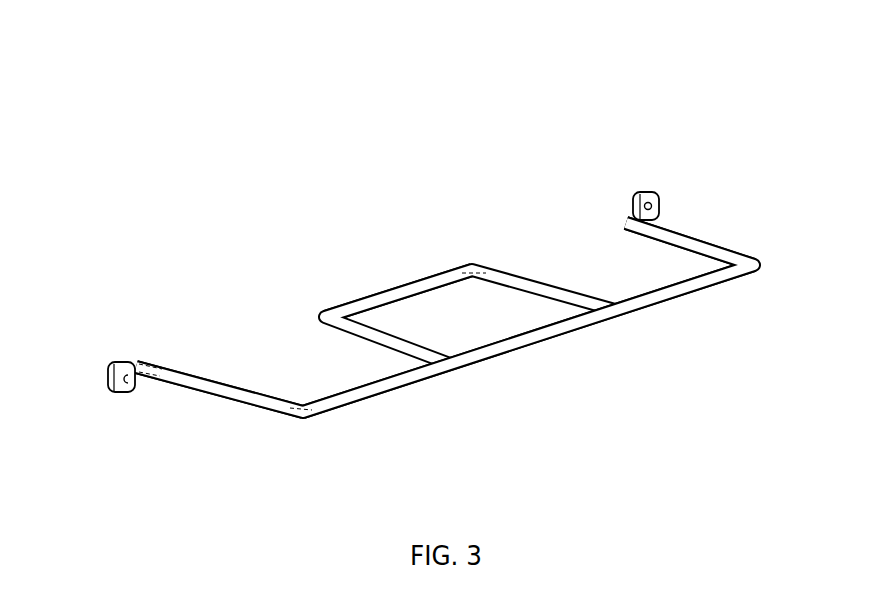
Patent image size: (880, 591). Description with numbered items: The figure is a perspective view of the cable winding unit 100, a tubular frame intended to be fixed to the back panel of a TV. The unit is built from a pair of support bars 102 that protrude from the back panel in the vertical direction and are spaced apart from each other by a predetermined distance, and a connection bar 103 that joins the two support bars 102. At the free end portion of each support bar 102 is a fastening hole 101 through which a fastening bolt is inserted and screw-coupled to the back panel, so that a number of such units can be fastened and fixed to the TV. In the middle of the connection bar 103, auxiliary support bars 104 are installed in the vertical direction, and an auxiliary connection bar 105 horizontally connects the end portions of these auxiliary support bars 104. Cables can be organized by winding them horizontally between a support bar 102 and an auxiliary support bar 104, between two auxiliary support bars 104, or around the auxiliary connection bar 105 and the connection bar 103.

The cable winding unit 100 is at (356, 142).
The fastening hole 101 is at (108, 377).
The support bar 102 is at (218, 390).
The connection bar 103 is at (532, 345).
The auxiliary support bar 104 is at (358, 335).
The auxiliary connection bar 105 is at (389, 290).